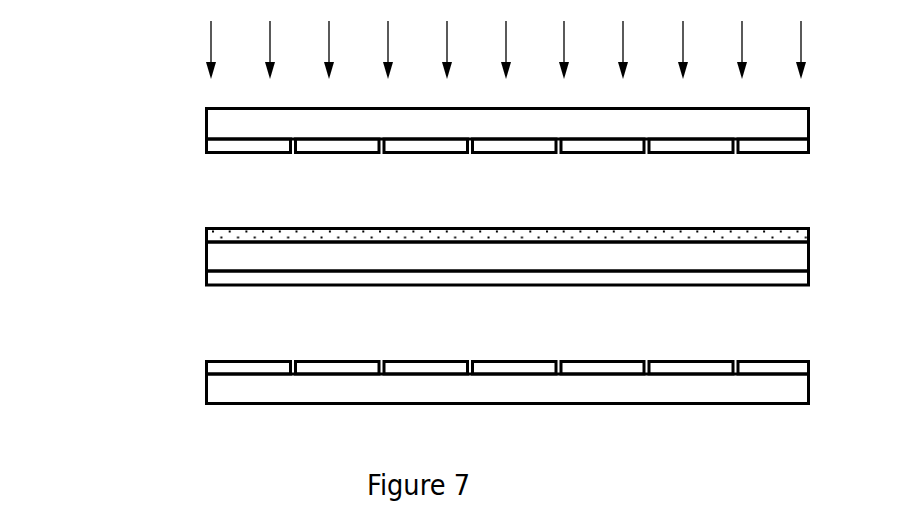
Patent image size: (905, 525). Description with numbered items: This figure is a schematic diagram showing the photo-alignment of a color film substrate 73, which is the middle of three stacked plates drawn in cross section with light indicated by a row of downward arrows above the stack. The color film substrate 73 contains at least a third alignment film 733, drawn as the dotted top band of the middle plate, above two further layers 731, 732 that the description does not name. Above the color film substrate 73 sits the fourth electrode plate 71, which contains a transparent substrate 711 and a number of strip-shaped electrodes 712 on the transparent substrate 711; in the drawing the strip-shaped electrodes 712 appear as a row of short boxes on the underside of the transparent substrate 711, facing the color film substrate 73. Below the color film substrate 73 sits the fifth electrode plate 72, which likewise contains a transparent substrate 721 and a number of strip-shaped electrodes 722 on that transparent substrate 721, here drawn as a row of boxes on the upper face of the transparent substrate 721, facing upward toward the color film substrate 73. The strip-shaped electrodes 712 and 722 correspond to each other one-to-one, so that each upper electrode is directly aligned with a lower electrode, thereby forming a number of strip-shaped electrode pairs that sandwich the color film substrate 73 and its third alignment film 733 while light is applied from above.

The fourth electrode plate 71 is at (90, 121).
The transparent substrate 711 is at (234, 120).
The strip-shaped electrodes 712 is at (453, 160).
The color film substrate 73 is at (90, 198).
The third alignment film 733 is at (453, 214).
The intermediate layer 731 is at (234, 256).
The bottom layer of intermediate stack 732 is at (453, 294).
The fifth electrode plate 72 is at (90, 345).
The strip-shaped electrodes 722 is at (453, 352).
The transparent substrate 721 is at (234, 392).